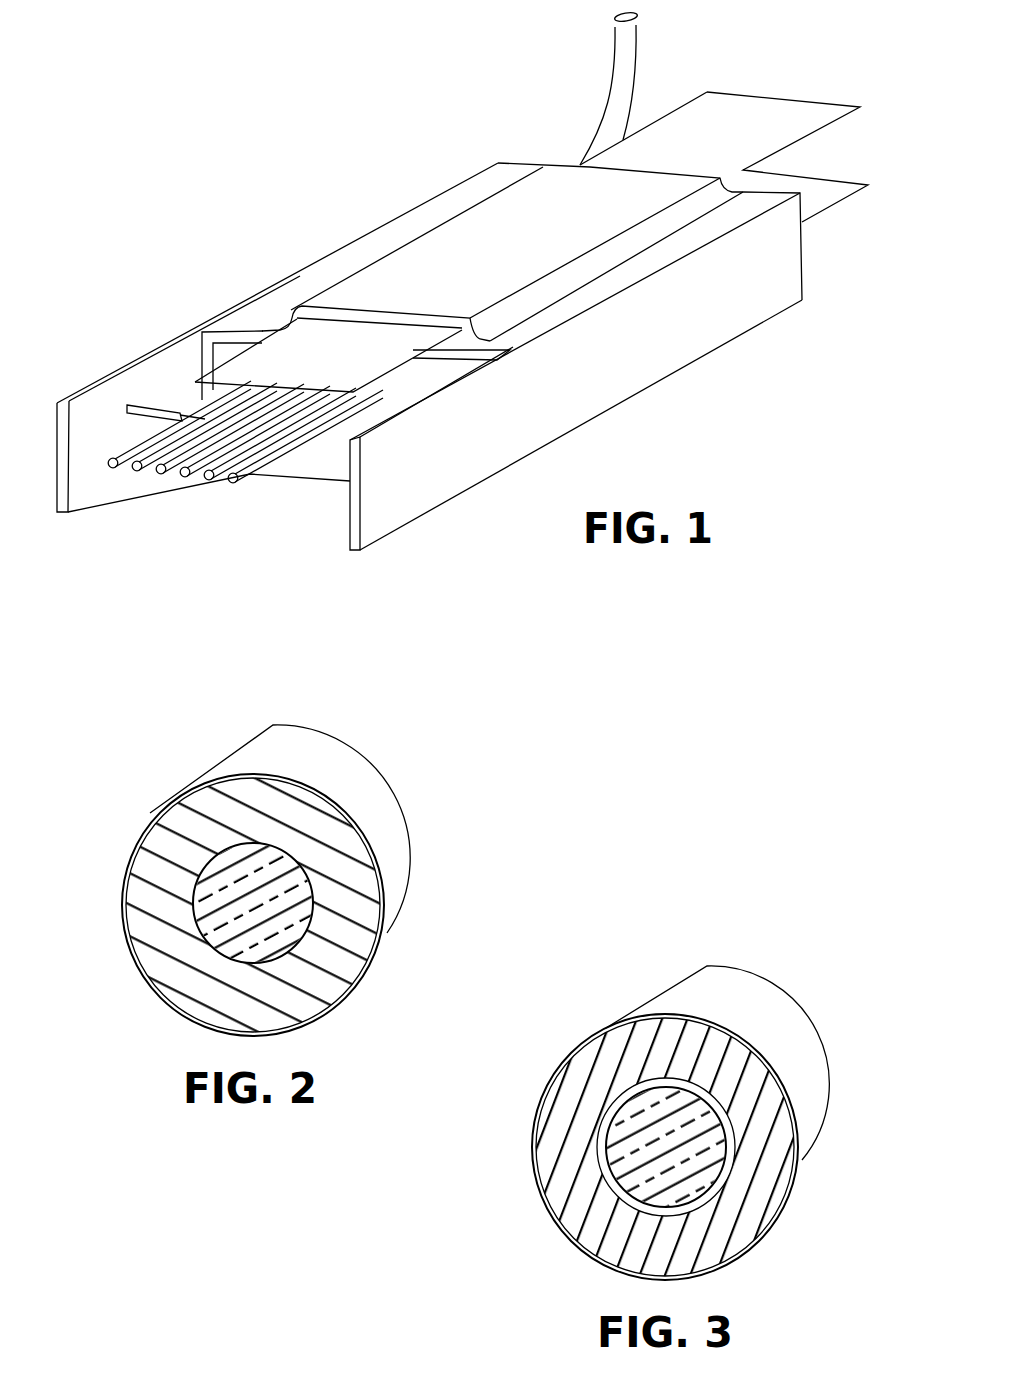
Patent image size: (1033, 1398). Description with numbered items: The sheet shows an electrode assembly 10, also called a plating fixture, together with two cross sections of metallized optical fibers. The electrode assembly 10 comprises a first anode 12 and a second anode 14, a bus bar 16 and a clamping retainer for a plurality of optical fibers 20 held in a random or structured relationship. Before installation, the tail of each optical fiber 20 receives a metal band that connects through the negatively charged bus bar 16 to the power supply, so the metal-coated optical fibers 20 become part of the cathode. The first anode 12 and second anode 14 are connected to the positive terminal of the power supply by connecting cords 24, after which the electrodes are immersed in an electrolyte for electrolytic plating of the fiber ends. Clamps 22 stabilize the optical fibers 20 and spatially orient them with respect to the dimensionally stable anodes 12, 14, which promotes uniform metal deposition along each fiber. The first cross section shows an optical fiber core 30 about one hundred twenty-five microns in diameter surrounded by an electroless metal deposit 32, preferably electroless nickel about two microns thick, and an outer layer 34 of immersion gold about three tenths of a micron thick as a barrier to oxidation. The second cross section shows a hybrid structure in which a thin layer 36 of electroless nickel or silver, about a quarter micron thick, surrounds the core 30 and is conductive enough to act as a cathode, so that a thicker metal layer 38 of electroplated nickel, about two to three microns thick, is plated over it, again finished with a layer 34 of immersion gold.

In FIG. 1, the electrode assembly 10 is at (340, 203).
In FIG. 1, the first anode 12 is at (287, 358).
In FIG. 1, the second anode 14 is at (310, 473).
In FIG. 1, the bus bar 16 is at (158, 405).
In FIG. 1, the optical fibers 20 is at (250, 475).
In FIG. 1, the clamps 22 is at (447, 376).
In FIG. 1, the connecting cords 24 is at (632, 65).
In FIG. 2, the optical fiber core 30 is at (300, 872).
In FIG. 3, the optical fiber core 30 is at (730, 1097).
In FIG. 2, the electroless metal deposit 32 is at (173, 872).
In FIG. 2, the outer layer of immersion gold 34 is at (147, 980).
In FIG. 3, the outer layer of immersion gold 34 is at (543, 1203).
In FIG. 3, the thin layer of electroless metal 36 is at (643, 1082).
In FIG. 3, the thicker metal layer 38 is at (573, 1097).